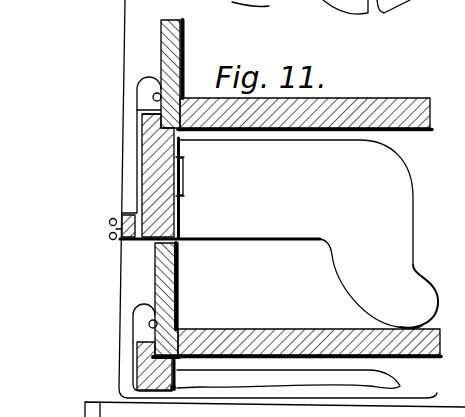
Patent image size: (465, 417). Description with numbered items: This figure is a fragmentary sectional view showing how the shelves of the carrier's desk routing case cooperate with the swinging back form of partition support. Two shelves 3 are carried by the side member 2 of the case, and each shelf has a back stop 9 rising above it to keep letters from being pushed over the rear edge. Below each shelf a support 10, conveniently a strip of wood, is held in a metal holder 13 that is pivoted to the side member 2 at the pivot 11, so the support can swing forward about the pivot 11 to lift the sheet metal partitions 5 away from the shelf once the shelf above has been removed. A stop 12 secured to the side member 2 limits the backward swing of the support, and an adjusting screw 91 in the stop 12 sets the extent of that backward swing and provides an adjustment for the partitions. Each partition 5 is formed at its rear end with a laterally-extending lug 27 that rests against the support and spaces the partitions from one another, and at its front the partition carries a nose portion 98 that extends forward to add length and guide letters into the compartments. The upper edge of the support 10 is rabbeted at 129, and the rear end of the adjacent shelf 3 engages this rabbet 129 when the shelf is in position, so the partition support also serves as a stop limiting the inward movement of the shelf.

The side member 2 is at (124, 17).
The shelf 3 is at (318, 100).
The partition 5 is at (300, 234).
The back stop 9 is at (160, 50).
The support 10 is at (142, 163).
The pivot 11 is at (153, 100).
The stop 12 is at (118, 244).
The metal holder 13 is at (138, 184).
The lug 27 is at (182, 198).
The adjusting screw 91 is at (110, 225).
The nose portion 98 is at (413, 300).
The rabbet 129 is at (142, 126).